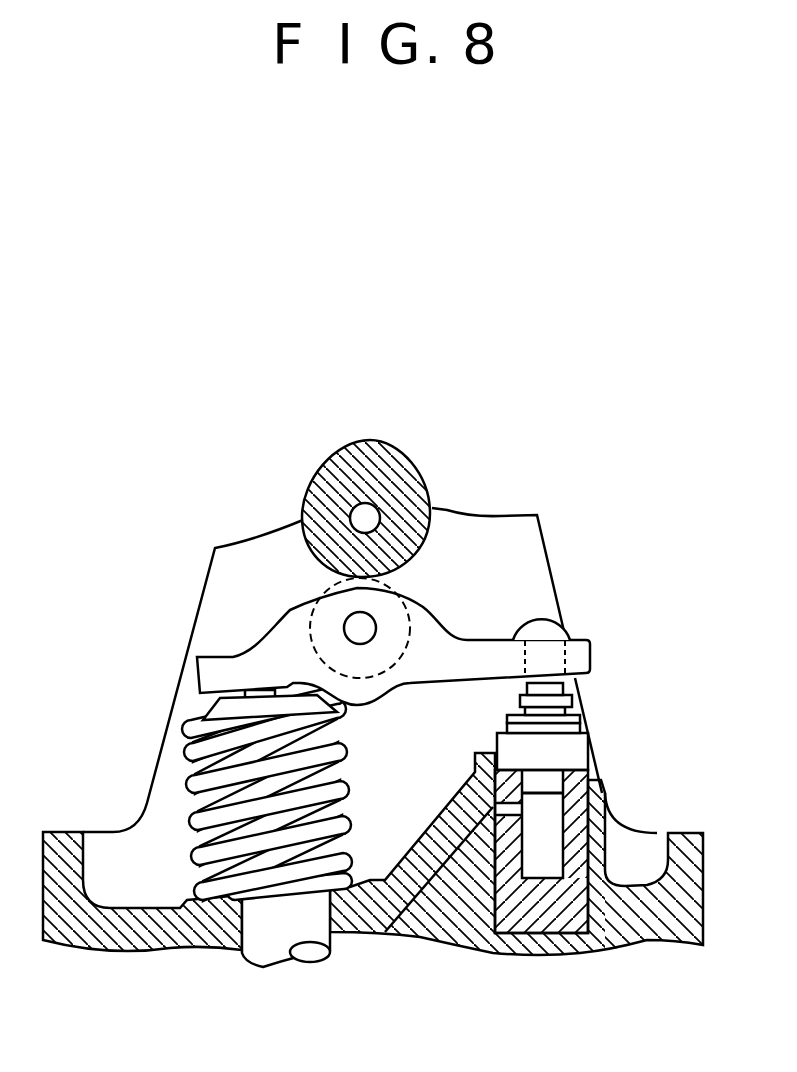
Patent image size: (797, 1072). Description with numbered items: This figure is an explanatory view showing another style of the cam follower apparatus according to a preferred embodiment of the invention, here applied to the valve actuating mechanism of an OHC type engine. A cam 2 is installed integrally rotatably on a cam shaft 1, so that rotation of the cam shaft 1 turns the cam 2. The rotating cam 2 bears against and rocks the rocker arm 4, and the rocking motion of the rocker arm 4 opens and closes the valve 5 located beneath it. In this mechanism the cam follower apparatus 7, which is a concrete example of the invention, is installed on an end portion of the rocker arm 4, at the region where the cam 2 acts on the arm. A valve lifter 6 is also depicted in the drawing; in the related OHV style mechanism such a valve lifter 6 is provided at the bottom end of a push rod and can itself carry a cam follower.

The cam shaft 1 is at (358, 512).
The cam 2 is at (374, 452).
The rocker arm 4 is at (398, 622).
The valve 5 is at (275, 938).
The valve lifter 6 is at (565, 758).
The cam follower apparatus 7 is at (402, 582).